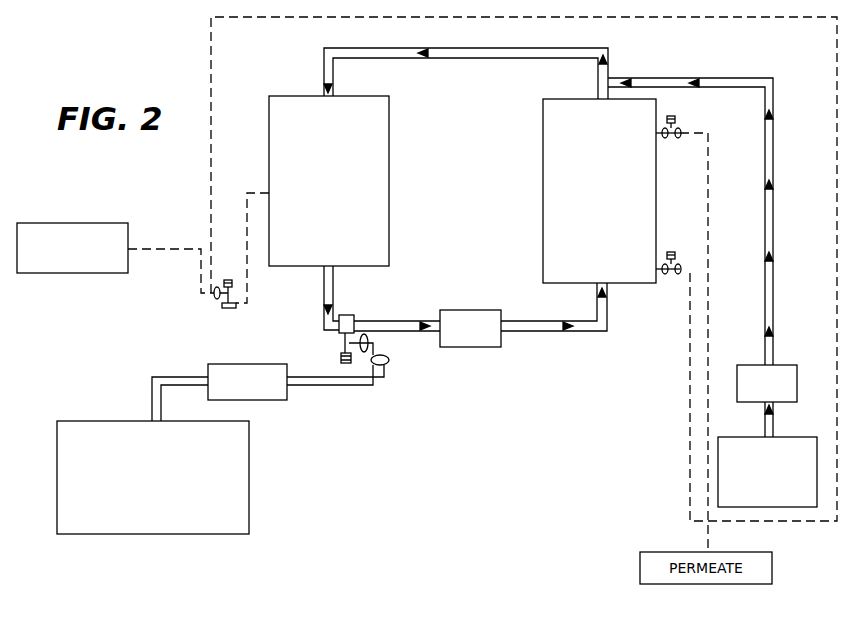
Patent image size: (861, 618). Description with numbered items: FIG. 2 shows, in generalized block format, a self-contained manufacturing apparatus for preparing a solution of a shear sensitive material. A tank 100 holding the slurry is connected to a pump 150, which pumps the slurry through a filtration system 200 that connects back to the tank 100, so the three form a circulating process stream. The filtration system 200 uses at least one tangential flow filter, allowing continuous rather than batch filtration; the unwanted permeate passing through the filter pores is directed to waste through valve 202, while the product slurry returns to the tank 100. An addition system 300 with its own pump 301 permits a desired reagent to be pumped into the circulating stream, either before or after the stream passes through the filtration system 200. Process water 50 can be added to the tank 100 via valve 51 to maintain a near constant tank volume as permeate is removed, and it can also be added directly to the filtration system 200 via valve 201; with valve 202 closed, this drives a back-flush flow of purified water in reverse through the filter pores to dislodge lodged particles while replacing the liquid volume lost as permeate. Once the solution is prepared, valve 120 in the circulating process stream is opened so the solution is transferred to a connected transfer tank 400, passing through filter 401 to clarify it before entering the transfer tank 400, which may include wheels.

The process water 50 is at (62, 255).
The valve 51 is at (228, 305).
The tank 100 is at (314, 184).
The valve 120 is at (352, 314).
The pump 150 is at (456, 335).
The filtration system 200 is at (585, 184).
The valve 201 is at (679, 273).
The valve 202 is at (676, 120).
The addition system 300 is at (753, 479).
The pump 301 is at (753, 391).
The transfer tank 400 is at (139, 484).
The filter 401 is at (233, 389).